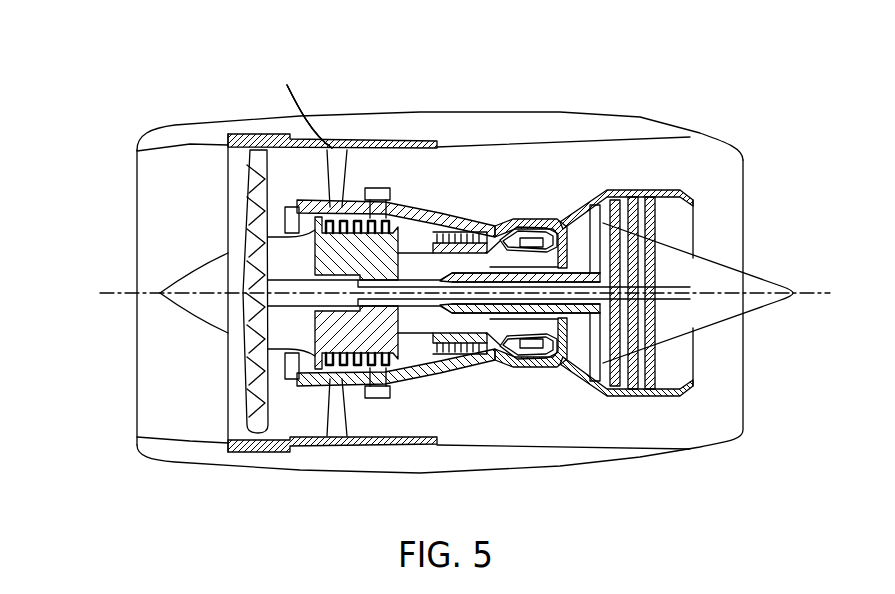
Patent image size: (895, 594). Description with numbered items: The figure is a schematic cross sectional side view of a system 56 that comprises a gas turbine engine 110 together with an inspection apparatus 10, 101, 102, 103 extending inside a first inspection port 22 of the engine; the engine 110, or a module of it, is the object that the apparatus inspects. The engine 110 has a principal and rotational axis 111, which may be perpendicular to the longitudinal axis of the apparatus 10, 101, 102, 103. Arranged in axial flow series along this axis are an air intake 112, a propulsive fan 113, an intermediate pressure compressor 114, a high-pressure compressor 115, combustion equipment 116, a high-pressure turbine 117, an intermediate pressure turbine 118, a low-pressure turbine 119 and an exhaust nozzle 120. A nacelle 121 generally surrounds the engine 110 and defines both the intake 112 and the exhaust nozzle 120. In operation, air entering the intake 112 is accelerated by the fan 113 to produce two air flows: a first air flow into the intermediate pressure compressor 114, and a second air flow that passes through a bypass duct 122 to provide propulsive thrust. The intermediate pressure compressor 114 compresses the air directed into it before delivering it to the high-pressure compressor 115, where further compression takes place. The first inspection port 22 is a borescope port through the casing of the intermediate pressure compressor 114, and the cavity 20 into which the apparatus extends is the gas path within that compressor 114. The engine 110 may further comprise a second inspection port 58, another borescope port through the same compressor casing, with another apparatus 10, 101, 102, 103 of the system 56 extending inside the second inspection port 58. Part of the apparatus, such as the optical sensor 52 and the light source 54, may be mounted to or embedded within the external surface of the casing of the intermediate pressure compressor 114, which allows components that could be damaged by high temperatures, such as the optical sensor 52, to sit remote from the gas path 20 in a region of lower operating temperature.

The apparatus 10 is at (332, 148).
The apparatus 101 is at (309, 116).
The apparatus 102 is at (309, 116).
The apparatus 103 is at (309, 116).
The cavity 20 is at (405, 233).
The first inspection port 22 is at (347, 200).
The optical sensor 52 is at (373, 188).
The light source 54 is at (378, 293).
The system 56 is at (115, 510).
The second inspection port 58 is at (391, 212).
The gas turbine engine 110 is at (108, 178).
The principal and rotational axis 111 is at (158, 293).
The air intake 112 is at (194, 145).
The propulsive fan 113 is at (248, 395).
The intermediate pressure compressor 114 is at (378, 380).
The high-pressure compressor 115 is at (494, 224).
The combustion equipment 116 is at (513, 352).
The high-pressure turbine 117 is at (563, 362).
The intermediate pressure turbine 118 is at (594, 207).
The low-pressure turbine 119 is at (613, 384).
The exhaust nozzle 120 is at (741, 432).
The nacelle 121 is at (576, 118).
The bypass duct 122 is at (400, 148).